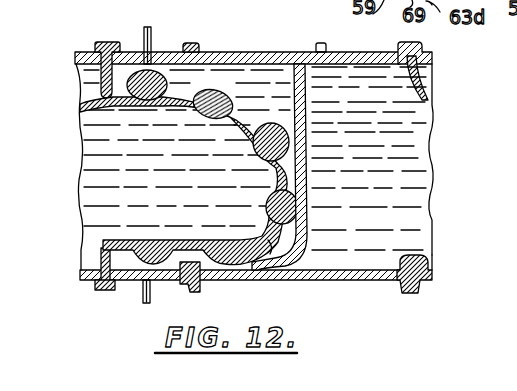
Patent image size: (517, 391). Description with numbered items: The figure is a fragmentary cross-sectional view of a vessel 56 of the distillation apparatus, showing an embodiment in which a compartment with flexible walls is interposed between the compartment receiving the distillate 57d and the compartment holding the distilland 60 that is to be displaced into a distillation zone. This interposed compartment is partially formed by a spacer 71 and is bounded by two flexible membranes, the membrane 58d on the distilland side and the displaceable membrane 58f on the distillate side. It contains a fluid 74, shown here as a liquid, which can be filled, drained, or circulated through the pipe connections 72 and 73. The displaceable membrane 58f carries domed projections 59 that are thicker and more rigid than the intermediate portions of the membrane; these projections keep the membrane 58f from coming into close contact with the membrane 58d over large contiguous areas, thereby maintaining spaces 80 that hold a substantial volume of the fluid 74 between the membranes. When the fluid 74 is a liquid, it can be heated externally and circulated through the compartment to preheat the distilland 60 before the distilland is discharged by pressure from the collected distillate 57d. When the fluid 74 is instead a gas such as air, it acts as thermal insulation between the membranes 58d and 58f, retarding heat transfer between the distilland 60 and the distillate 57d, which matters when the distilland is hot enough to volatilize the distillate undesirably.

The vessel 56 is at (424, 60).
The distillate 57d is at (100, 143).
The membrane 58d is at (295, 62).
The displaceable membrane 58f is at (97, 73).
The domed projections 59 is at (100, 105).
The distilland 60 is at (388, 127).
The spacer 71 is at (165, 56).
The pipe connection 72 is at (142, 40).
The pipe connection 73 is at (138, 292).
The fluid 74 is at (243, 87).
The spaces 80 is at (255, 272).